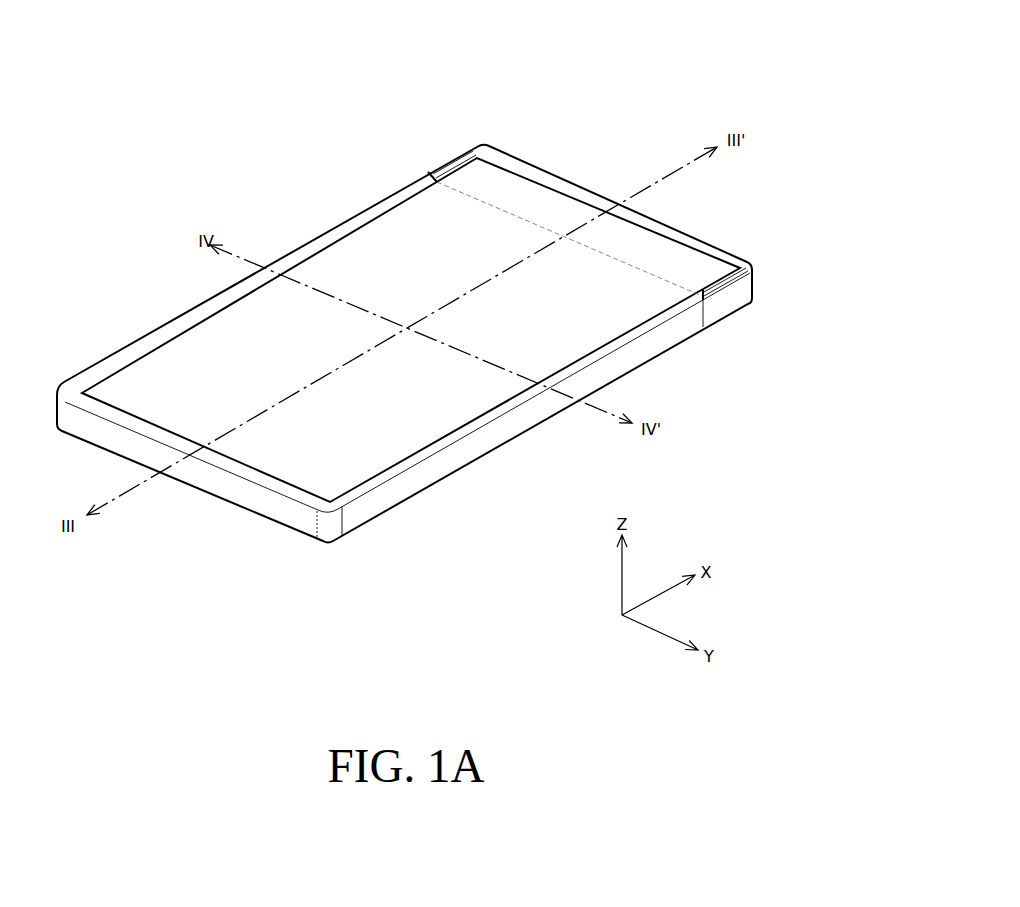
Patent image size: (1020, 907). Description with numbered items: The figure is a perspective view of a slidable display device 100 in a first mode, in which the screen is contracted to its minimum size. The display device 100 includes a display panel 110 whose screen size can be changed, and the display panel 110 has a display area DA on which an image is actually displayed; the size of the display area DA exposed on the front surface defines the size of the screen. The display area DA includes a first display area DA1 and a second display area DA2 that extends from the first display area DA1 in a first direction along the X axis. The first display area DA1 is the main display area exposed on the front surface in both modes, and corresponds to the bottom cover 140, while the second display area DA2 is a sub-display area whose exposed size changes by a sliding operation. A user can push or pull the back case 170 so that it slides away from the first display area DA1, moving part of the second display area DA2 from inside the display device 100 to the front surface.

The display device 100 is at (598, 46).
The display panel 110 is at (408, 430).
The bottom cover 140 is at (268, 502).
The back case 170 is at (741, 287).
The display area DA is at (703, 422).
The first display area DA1 is at (628, 312).
The second display area DA2 is at (695, 272).